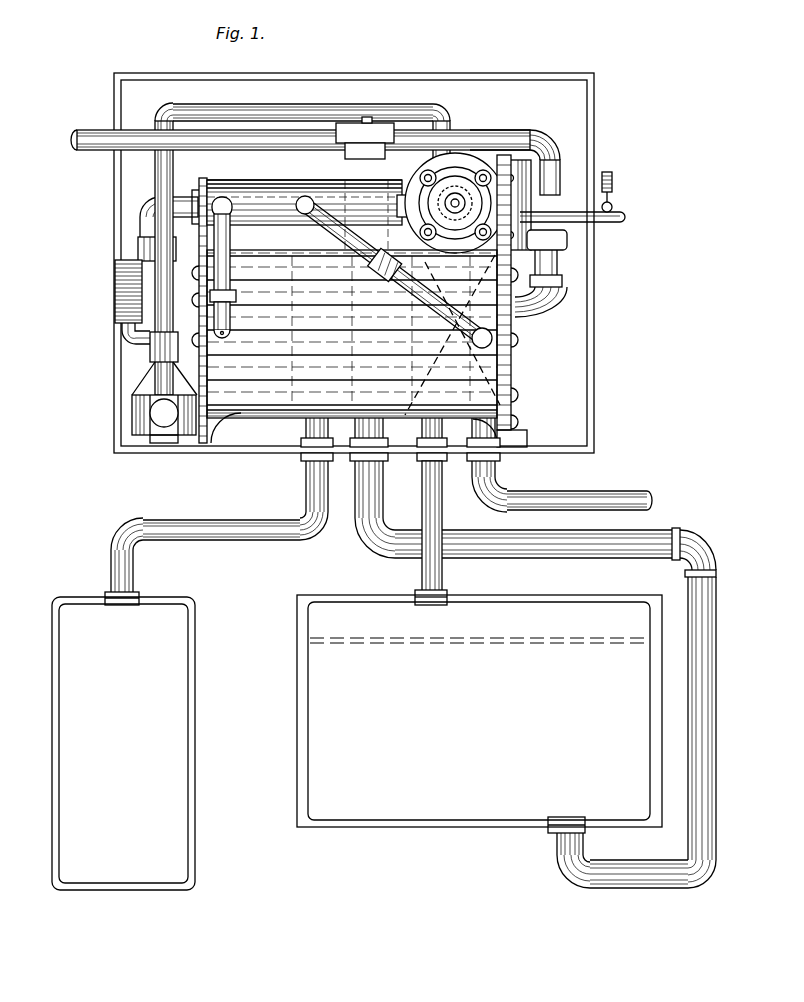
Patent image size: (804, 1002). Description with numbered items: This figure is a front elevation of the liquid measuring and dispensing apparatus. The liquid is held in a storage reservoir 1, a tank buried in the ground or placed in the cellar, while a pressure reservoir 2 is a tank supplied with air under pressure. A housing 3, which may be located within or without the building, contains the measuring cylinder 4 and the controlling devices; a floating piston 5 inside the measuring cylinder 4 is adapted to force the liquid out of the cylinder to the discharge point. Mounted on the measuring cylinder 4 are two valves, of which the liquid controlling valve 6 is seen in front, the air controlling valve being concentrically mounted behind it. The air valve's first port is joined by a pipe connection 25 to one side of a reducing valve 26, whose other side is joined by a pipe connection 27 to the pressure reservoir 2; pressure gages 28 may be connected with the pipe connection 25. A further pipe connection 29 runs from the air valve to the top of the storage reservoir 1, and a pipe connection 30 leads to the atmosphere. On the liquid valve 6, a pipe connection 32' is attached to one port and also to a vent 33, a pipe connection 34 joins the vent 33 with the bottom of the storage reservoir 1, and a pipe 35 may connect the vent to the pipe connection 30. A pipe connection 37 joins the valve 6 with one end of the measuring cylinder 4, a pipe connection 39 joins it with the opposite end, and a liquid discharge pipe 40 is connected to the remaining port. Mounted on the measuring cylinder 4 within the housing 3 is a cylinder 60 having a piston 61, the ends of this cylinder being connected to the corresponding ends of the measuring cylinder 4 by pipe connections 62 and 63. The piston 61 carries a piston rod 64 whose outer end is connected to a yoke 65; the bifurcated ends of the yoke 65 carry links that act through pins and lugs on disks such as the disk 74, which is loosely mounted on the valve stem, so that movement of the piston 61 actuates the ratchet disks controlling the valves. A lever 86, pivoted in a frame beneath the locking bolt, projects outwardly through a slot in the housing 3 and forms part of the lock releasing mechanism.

The storage reservoir 1 is at (412, 828).
The pressure reservoir 2 is at (195, 788).
The housing 3 is at (594, 358).
The measuring cylinder 4 is at (352, 334).
The floating piston 5 is at (500, 372).
The valve 6 is at (546, 145).
The pipe connection 25 is at (248, 108).
The reducing valve 26 is at (132, 415).
The pipe connection 27 is at (306, 482).
The pressure gages 28 is at (118, 303).
The pipe connection 29 is at (442, 493).
The pipe connection 30 is at (543, 500).
The pipe connection 32' is at (464, 132).
The vent 33 is at (356, 128).
The pipe connection 34 is at (383, 481).
The pipe 35 is at (492, 132).
The pipe connection 37 is at (140, 220).
The pipe connection 39 is at (570, 260).
The liquid discharge pipe 40 is at (100, 137).
The cylinder 60 is at (238, 181).
The piston 61 is at (288, 186).
The pipe connection 62 is at (229, 270).
The pipe connection 63 is at (415, 285).
The piston rod 64 is at (358, 202).
The yoke 65 is at (372, 262).
The disk 74 is at (468, 203).
The lever 86 is at (566, 212).